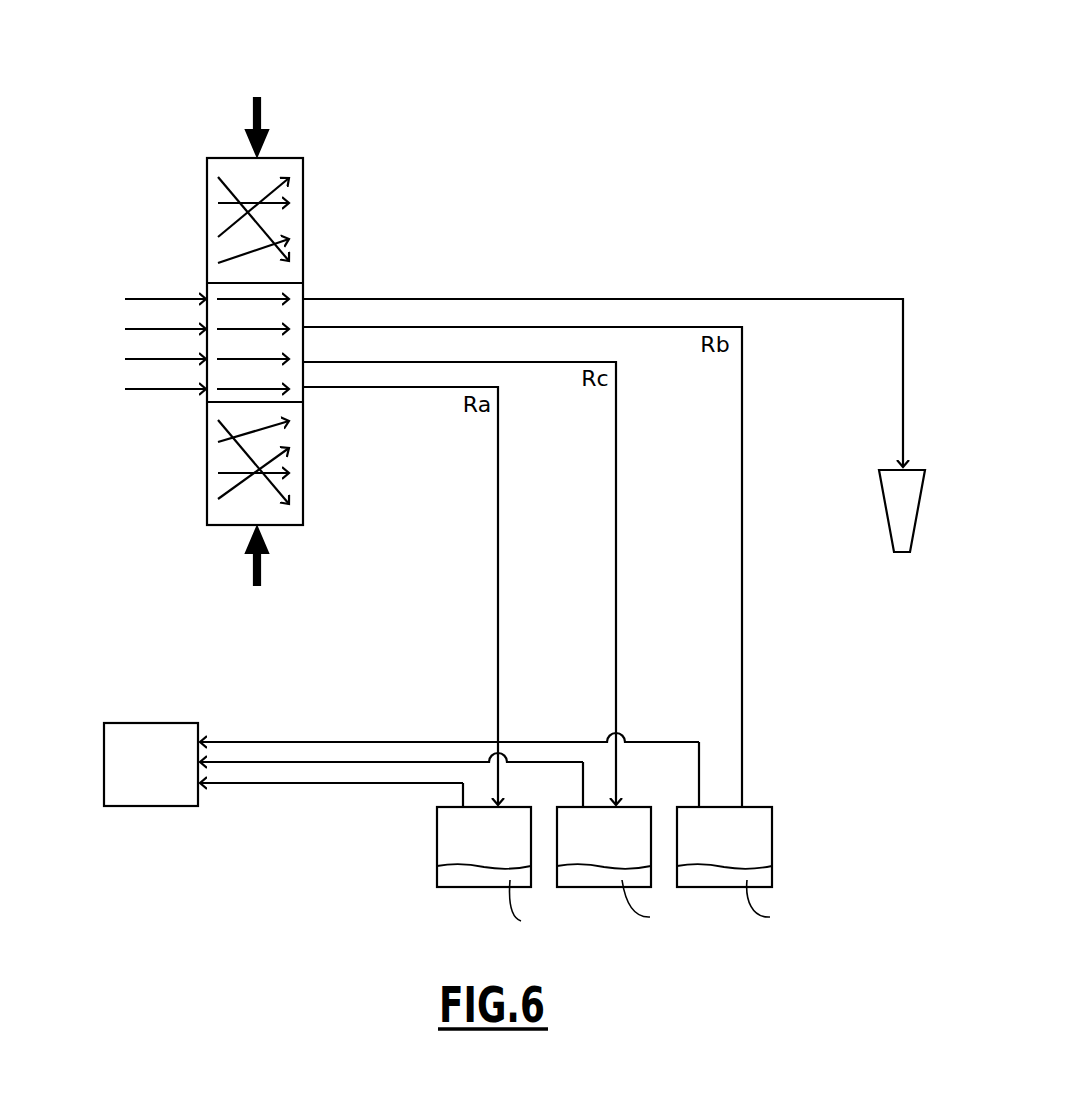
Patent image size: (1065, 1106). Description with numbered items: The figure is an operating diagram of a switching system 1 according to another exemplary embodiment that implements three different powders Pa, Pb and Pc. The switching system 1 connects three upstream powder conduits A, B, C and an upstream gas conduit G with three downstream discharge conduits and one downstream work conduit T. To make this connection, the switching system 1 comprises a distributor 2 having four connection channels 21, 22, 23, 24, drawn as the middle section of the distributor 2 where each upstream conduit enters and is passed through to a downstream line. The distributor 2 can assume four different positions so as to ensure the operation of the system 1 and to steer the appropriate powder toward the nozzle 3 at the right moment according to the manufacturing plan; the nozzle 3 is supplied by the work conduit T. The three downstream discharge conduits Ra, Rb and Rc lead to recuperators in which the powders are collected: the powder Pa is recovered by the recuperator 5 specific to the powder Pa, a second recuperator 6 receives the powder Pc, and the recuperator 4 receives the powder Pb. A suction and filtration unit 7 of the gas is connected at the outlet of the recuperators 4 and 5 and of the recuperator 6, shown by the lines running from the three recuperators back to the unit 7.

The switching system 1 is at (332, 115).
The distributor 2 is at (332, 245).
The connection channel 21 is at (255, 331).
The connection channel 22 is at (251, 392).
The connection channel 23 is at (255, 302).
The connection channel 24 is at (252, 364).
The nozzle 3 is at (904, 524).
The recuperator 4 is at (772, 838).
The recuperator 5 is at (436, 840).
The tank Pc 6 is at (582, 890).
The suction and filtration unit 7 is at (110, 768).